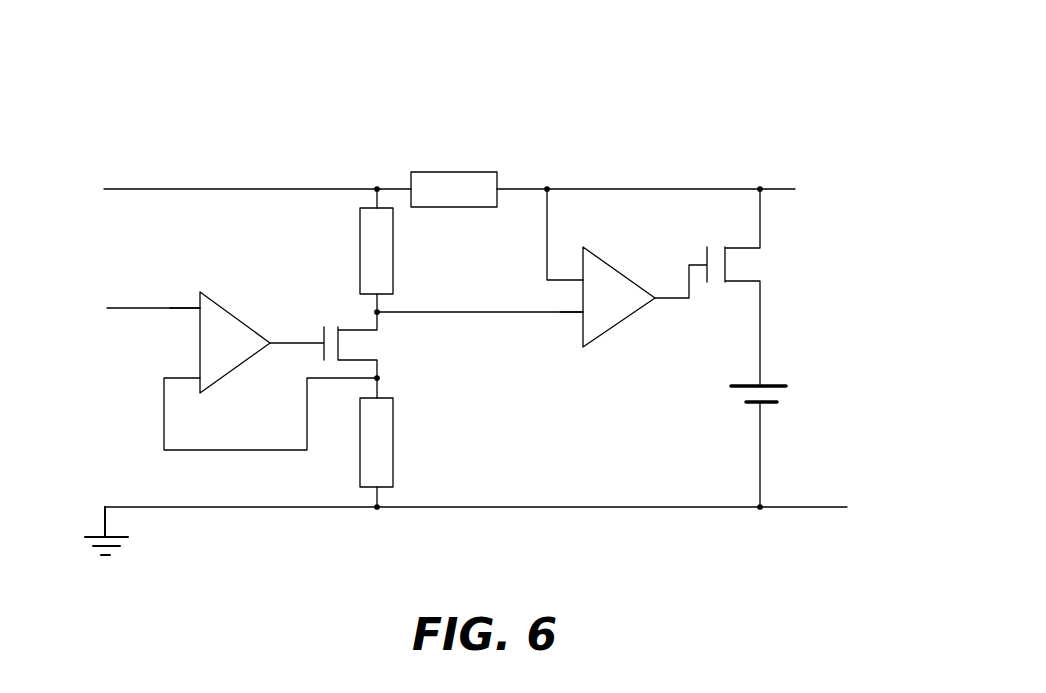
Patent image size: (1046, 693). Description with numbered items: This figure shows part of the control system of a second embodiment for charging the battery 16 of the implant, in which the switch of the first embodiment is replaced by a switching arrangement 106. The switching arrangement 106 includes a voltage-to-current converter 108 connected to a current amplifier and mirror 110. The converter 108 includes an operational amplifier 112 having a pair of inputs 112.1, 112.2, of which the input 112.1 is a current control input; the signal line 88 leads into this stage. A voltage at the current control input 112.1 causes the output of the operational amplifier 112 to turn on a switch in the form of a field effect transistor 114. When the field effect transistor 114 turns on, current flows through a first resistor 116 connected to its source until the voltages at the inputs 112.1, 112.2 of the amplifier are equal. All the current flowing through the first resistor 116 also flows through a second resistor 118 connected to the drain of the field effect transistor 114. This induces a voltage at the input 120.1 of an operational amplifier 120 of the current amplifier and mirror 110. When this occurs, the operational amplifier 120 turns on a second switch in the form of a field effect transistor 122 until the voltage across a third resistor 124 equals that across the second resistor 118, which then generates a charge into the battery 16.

The battery 16 is at (774, 381).
The input signal 88 is at (118, 222).
The switching arrangement 106 is at (712, 102).
The voltage-to-current converter 108 is at (266, 250).
The current amplifier and mirror 110 is at (624, 242).
The operational amplifier 112 is at (226, 330).
The current control input 112.1 is at (199, 305).
The input 112.2 is at (198, 383).
The field effect transistor 114 is at (396, 345).
The first resistor 116 is at (380, 461).
The second resistor 118 is at (383, 262).
The operational amplifier 120 is at (617, 310).
The input 120.1 is at (583, 308).
The FET 122 is at (774, 256).
The third resistor 124 is at (450, 185).